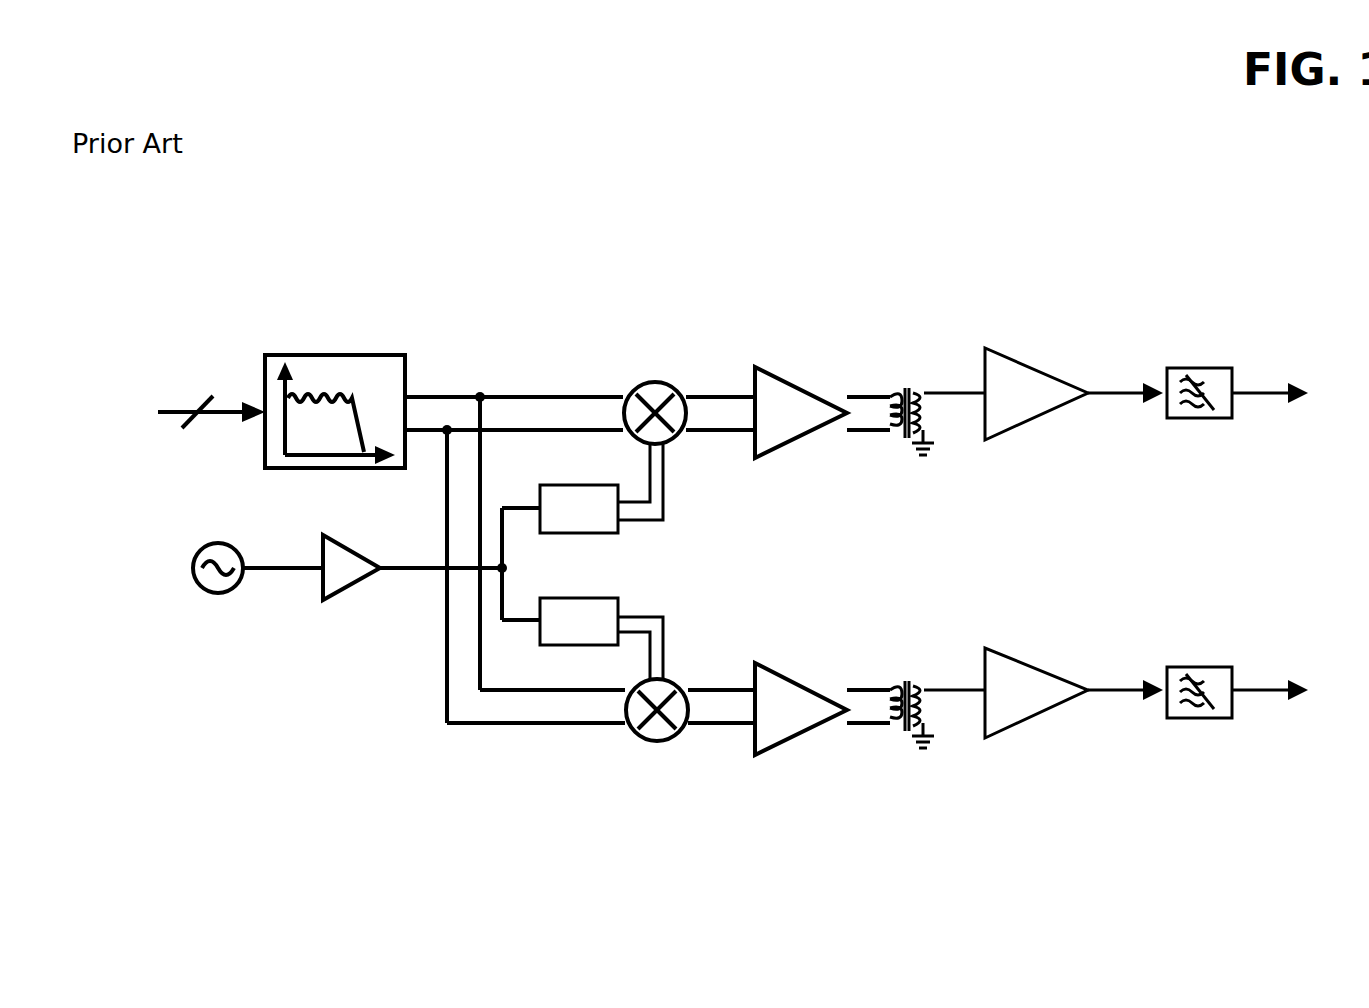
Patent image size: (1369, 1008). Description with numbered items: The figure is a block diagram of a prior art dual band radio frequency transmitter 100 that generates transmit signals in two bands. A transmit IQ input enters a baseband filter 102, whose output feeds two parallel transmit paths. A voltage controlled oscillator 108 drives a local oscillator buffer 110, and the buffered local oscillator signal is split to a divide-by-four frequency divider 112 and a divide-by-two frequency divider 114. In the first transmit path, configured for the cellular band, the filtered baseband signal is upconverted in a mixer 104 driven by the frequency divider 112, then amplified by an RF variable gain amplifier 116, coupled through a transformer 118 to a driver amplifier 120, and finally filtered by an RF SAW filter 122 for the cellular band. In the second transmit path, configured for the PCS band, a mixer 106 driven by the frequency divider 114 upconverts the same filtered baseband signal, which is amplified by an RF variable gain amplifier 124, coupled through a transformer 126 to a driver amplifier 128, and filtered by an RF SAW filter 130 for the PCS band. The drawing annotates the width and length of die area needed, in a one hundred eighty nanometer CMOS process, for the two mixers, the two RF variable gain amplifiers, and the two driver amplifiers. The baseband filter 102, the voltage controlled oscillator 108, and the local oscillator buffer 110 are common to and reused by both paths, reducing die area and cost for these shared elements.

The dual band RF transmitter 100 is at (686, 451).
The baseband filter 102 is at (336, 375).
The mixer 104 is at (676, 357).
The mixer 106 is at (674, 773).
The voltage controlled oscillator 108 is at (213, 609).
The local oscillator buffer 110 is at (349, 605).
The frequency divider 112 is at (601, 488).
The frequency divider 114 is at (601, 624).
The RF variable gain amplifier 116 is at (802, 427).
The transformer 118 is at (925, 360).
The driver amplifier 120 is at (1054, 422).
The RF SAW filter 122 is at (1225, 388).
The RF variable gain amplifier 124 is at (802, 695).
The transformer 126 is at (925, 775).
The driver amplifier 128 is at (1054, 679).
The RF SAW filter 130 is at (1237, 752).